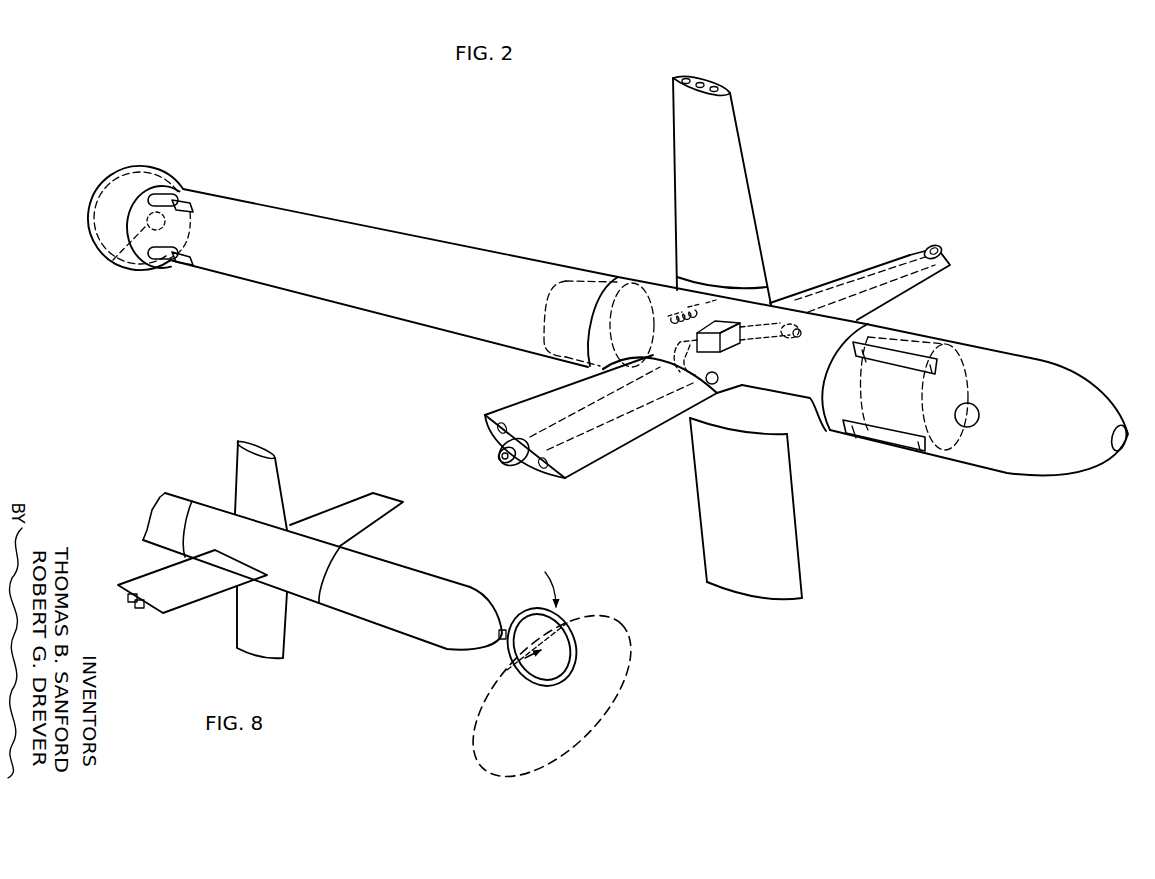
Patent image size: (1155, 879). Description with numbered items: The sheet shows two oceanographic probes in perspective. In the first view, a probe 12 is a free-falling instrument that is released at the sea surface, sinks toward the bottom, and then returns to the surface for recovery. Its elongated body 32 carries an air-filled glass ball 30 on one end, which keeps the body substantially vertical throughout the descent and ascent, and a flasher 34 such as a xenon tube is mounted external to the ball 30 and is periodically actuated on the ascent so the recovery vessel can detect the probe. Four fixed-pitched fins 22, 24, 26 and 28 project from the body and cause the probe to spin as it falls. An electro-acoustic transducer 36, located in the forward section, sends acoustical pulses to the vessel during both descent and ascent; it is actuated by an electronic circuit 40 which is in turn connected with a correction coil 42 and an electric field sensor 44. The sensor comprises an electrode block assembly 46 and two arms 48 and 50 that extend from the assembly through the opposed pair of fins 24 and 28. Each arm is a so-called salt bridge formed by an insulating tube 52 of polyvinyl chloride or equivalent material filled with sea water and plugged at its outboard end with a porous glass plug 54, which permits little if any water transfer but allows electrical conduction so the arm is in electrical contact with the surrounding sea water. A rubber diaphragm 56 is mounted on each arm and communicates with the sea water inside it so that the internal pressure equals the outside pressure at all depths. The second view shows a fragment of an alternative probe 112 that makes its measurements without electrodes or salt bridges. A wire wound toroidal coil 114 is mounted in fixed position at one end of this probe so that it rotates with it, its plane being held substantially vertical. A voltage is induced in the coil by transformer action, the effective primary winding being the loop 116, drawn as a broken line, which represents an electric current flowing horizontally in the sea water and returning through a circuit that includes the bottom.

In FIG. 2, the probe 12 is at (975, 429).
In FIG. 2, the fixed-pitched fin 22 is at (735, 115).
In FIG. 2, the fixed-pitched fin 24 is at (580, 455).
In FIG. 2, the fixed-pitched fin 26 is at (785, 555).
In FIG. 2, the fixed-pitched fin 28 is at (905, 272).
In FIG. 2, the air-filled glass ball 30 is at (186, 228).
In FIG. 2, the body 32 is at (431, 292).
In FIG. 2, the flasher 34 is at (113, 262).
In FIG. 2, the electro-acoustic transducer 36 is at (965, 375).
In FIG. 2, the electronic circuit 40 is at (546, 308).
In FIG. 2, the correction coil 42 is at (713, 307).
In FIG. 2, the electric field sensor 44 is at (666, 400).
In FIG. 2, the electrode block assembly 46 is at (742, 352).
In FIG. 2, the arm 48 is at (593, 424).
In FIG. 2, the arm 50 is at (868, 272).
In FIG. 2, the insulating tube 52 is at (585, 408).
In FIG. 2, the porous glass plug 54 is at (500, 459).
In FIG. 2, the rubber diaphragm 56 is at (720, 379).
In FIG. 8, the probe 112 is at (322, 637).
In FIG. 8, the wire wound toroidal coil 114 is at (540, 683).
In FIG. 8, the loop 116 is at (467, 727).